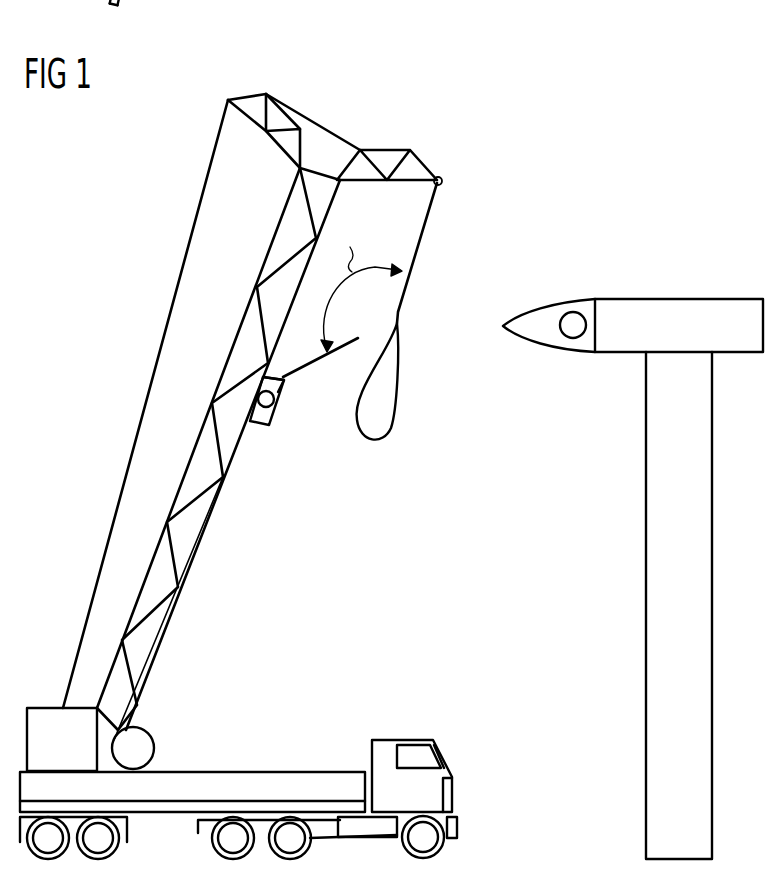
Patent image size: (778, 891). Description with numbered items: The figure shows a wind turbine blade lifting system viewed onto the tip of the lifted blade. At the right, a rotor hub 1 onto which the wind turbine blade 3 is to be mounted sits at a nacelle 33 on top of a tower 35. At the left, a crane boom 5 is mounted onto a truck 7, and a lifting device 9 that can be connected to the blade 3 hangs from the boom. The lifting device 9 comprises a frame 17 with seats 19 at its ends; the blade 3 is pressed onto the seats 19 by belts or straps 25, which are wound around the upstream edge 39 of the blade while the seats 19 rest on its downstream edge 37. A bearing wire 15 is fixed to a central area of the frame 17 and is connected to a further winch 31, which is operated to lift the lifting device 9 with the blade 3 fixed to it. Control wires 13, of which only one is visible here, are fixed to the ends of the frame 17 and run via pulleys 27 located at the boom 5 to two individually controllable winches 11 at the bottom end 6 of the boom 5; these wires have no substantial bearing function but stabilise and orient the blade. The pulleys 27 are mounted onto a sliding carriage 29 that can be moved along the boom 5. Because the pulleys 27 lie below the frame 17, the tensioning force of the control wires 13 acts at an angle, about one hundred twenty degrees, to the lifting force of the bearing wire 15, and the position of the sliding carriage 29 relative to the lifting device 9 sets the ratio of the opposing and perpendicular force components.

The rotor hub 1 is at (633, 300).
The wind turbine blade 3 is at (403, 408).
The crane boom 5 is at (250, 429).
The bottom end of the boom 6 is at (100, 733).
The truck 7 is at (322, 782).
The lifting device 9 is at (268, 182).
The winches 11 is at (147, 737).
The control wires 13 is at (310, 372).
The bearing wire 15 is at (432, 213).
The frame 17 is at (259, 182).
The seats 19 is at (123, 16).
The belts or straps 25 is at (398, 400).
The pulleys 27 is at (255, 422).
The sliding carriage 29 is at (282, 431).
The further winch 31 is at (48, 716).
The nacelle 33 is at (680, 305).
The tower 35 is at (705, 587).
The downstream edge 37 is at (400, 310).
The upstream edge 39 is at (375, 441).